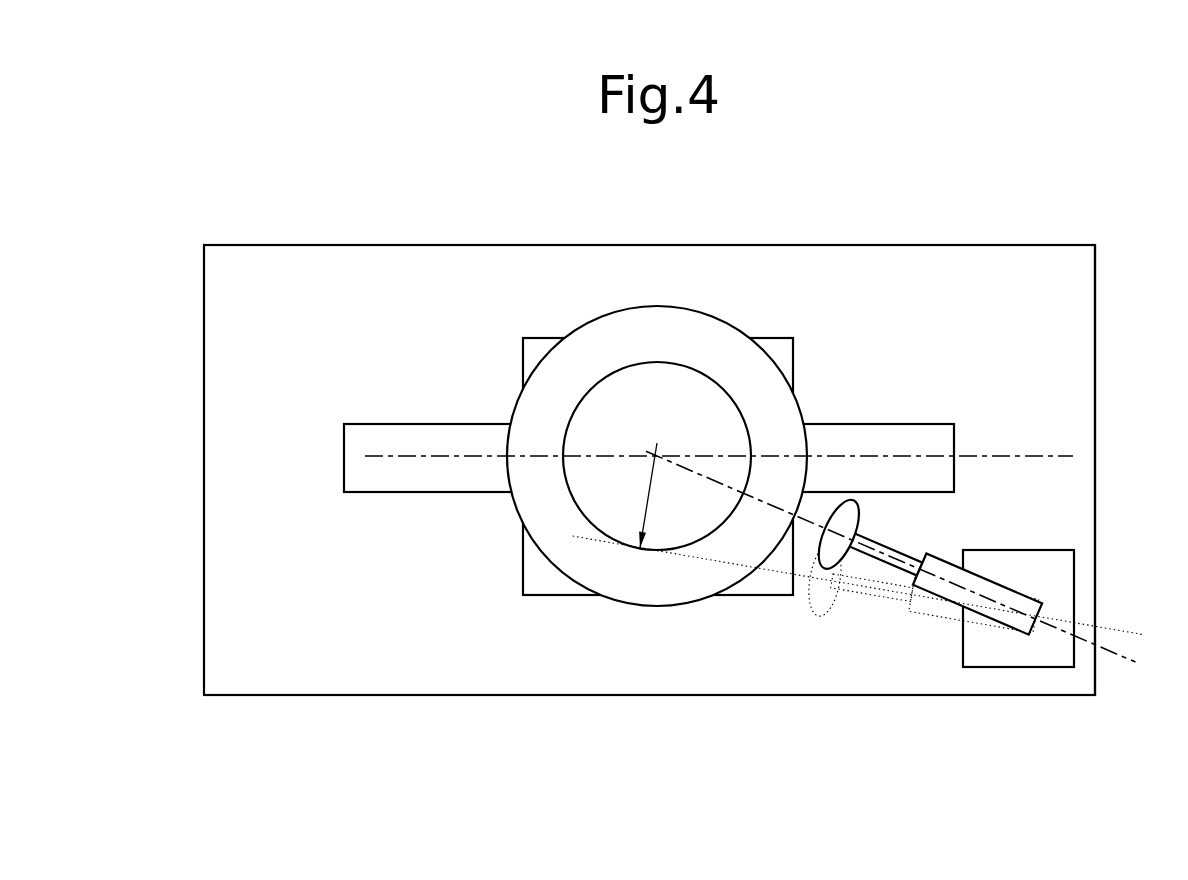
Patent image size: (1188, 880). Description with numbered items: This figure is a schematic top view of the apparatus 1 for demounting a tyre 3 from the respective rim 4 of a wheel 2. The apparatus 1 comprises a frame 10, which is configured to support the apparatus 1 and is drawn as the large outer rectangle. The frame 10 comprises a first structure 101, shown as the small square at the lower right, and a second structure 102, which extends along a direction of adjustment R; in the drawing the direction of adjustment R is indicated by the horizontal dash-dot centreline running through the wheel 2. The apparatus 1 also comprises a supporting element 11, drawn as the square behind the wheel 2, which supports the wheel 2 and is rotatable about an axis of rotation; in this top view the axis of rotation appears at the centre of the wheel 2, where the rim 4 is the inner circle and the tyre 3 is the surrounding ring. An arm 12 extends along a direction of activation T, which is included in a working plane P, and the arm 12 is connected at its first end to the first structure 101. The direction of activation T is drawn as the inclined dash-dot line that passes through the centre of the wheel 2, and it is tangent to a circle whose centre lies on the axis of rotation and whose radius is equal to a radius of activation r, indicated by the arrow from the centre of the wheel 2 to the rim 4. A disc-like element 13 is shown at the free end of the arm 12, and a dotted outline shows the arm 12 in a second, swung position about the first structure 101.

The apparatus 1 is at (688, 424).
The wheel 2 is at (680, 393).
The tyre 3 is at (780, 411).
The rim 4 is at (704, 397).
The frame 10 is at (1098, 355).
The supporting element 11 is at (778, 347).
The arm 12 is at (940, 562).
The tool disk 13 is at (848, 513).
The first structure 101 is at (1060, 560).
The second structure 102 is at (1072, 480).
The working plane P is at (1002, 272).
The direction of adjustment R is at (1049, 454).
The radius of activation r is at (648, 502).
The direction of activation T is at (1112, 660).